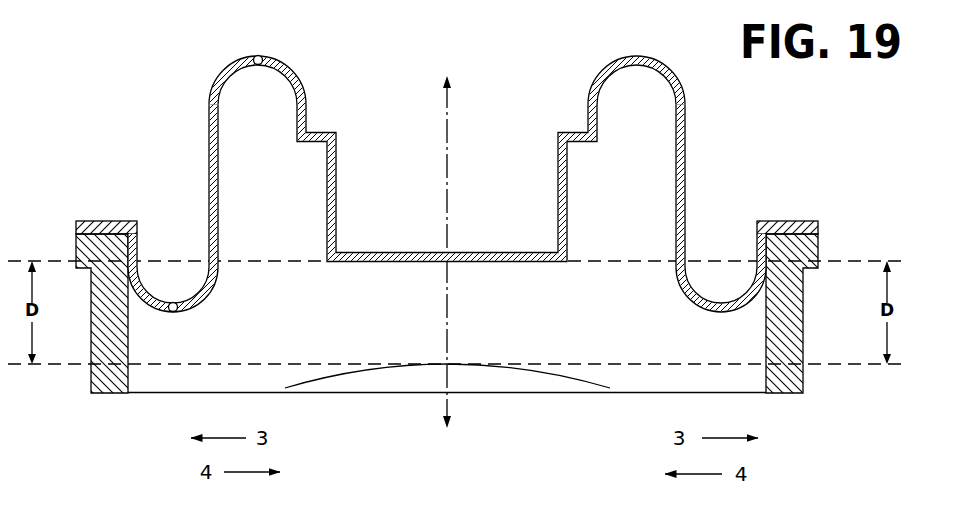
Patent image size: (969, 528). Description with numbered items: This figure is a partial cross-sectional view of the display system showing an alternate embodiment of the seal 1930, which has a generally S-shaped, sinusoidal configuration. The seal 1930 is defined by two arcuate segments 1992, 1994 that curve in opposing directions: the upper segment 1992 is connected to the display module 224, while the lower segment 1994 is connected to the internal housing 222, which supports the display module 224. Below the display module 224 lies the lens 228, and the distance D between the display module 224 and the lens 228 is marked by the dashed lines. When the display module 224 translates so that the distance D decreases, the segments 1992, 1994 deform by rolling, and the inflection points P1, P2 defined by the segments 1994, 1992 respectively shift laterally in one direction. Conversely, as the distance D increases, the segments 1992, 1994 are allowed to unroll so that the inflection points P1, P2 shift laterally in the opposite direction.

The internal housing 222 is at (74, 240).
The display module 224 is at (340, 183).
The lens 228 is at (552, 373).
The seal 1930 is at (427, 238).
The arcuate segment 1992 is at (300, 70).
The arcuate segment 1994 is at (153, 307).
The inflection point P1 is at (175, 312).
The inflection point P2 is at (262, 57).